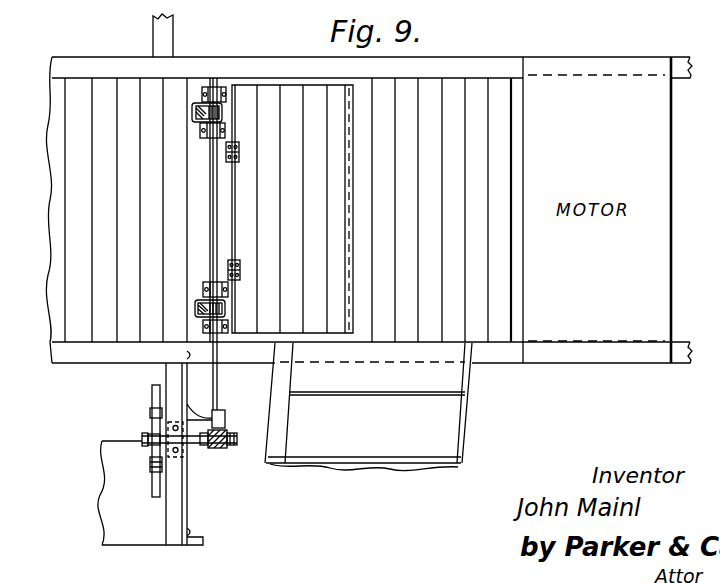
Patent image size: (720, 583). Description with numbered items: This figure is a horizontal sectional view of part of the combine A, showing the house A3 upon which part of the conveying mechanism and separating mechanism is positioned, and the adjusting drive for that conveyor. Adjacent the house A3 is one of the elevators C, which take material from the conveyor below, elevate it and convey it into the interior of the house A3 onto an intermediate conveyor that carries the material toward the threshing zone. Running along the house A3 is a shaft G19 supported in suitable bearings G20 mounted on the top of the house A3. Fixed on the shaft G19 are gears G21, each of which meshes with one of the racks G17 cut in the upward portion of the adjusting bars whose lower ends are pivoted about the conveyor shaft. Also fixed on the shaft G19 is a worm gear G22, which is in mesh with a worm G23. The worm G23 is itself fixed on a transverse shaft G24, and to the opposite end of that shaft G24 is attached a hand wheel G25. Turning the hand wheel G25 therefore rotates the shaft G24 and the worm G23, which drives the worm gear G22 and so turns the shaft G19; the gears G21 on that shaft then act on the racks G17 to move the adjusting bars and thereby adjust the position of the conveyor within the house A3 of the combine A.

The combine A is at (42, 52).
The house A3 is at (479, 82).
The elevator C is at (440, 418).
The rack G17 is at (100, 382).
The shaft G19 is at (221, 383).
The bearing G20 is at (221, 88).
The gear G21 is at (224, 112).
The worm gear G22 is at (236, 444).
The worm G23 is at (216, 449).
The shaft G24 is at (142, 437).
The hand wheel G25 is at (151, 462).